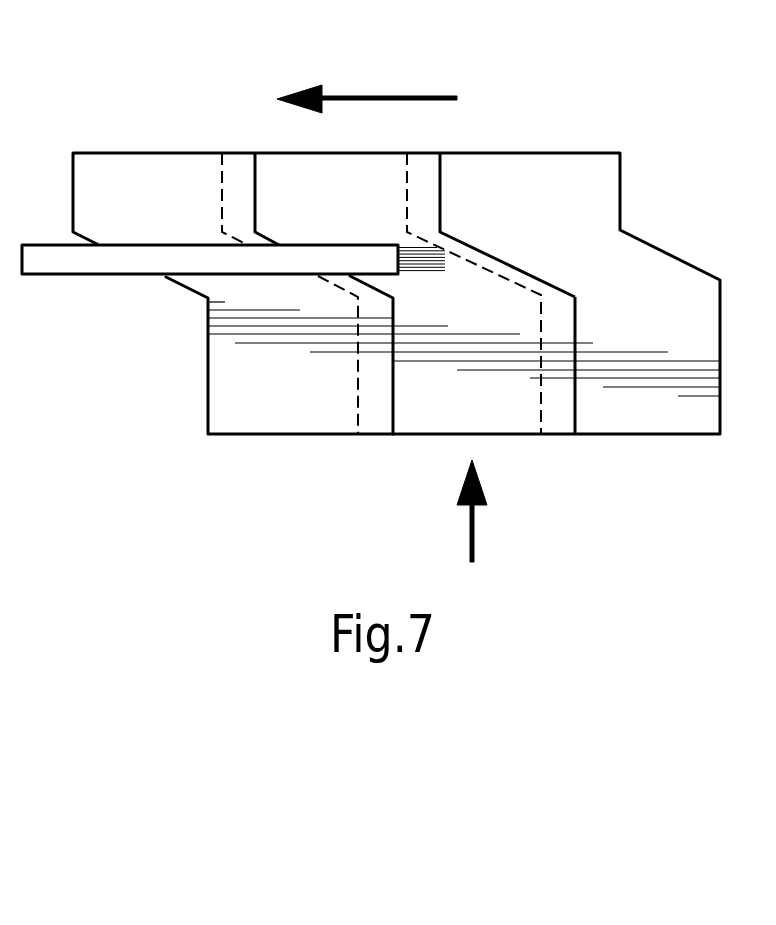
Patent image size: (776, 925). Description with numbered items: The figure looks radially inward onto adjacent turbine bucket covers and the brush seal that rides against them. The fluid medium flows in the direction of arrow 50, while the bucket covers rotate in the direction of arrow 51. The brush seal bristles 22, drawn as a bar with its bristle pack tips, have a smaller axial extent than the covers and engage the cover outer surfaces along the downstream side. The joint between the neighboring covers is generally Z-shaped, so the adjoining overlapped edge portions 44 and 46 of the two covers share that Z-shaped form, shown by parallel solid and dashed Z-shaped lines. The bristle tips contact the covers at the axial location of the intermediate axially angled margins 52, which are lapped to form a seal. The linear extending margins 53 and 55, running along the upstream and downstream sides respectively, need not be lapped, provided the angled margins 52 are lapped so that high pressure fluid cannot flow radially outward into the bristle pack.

The bristles 22 is at (407, 245).
The overlapped edge portion 44 is at (236, 167).
The overlapped edge portion 46 is at (222, 181).
The arrow 50 is at (474, 535).
The arrow 51 is at (407, 95).
The intermediate axially angled margins 52 is at (493, 268).
The linear extending margin 53 is at (574, 390).
The linear extending margin 55 is at (440, 172).